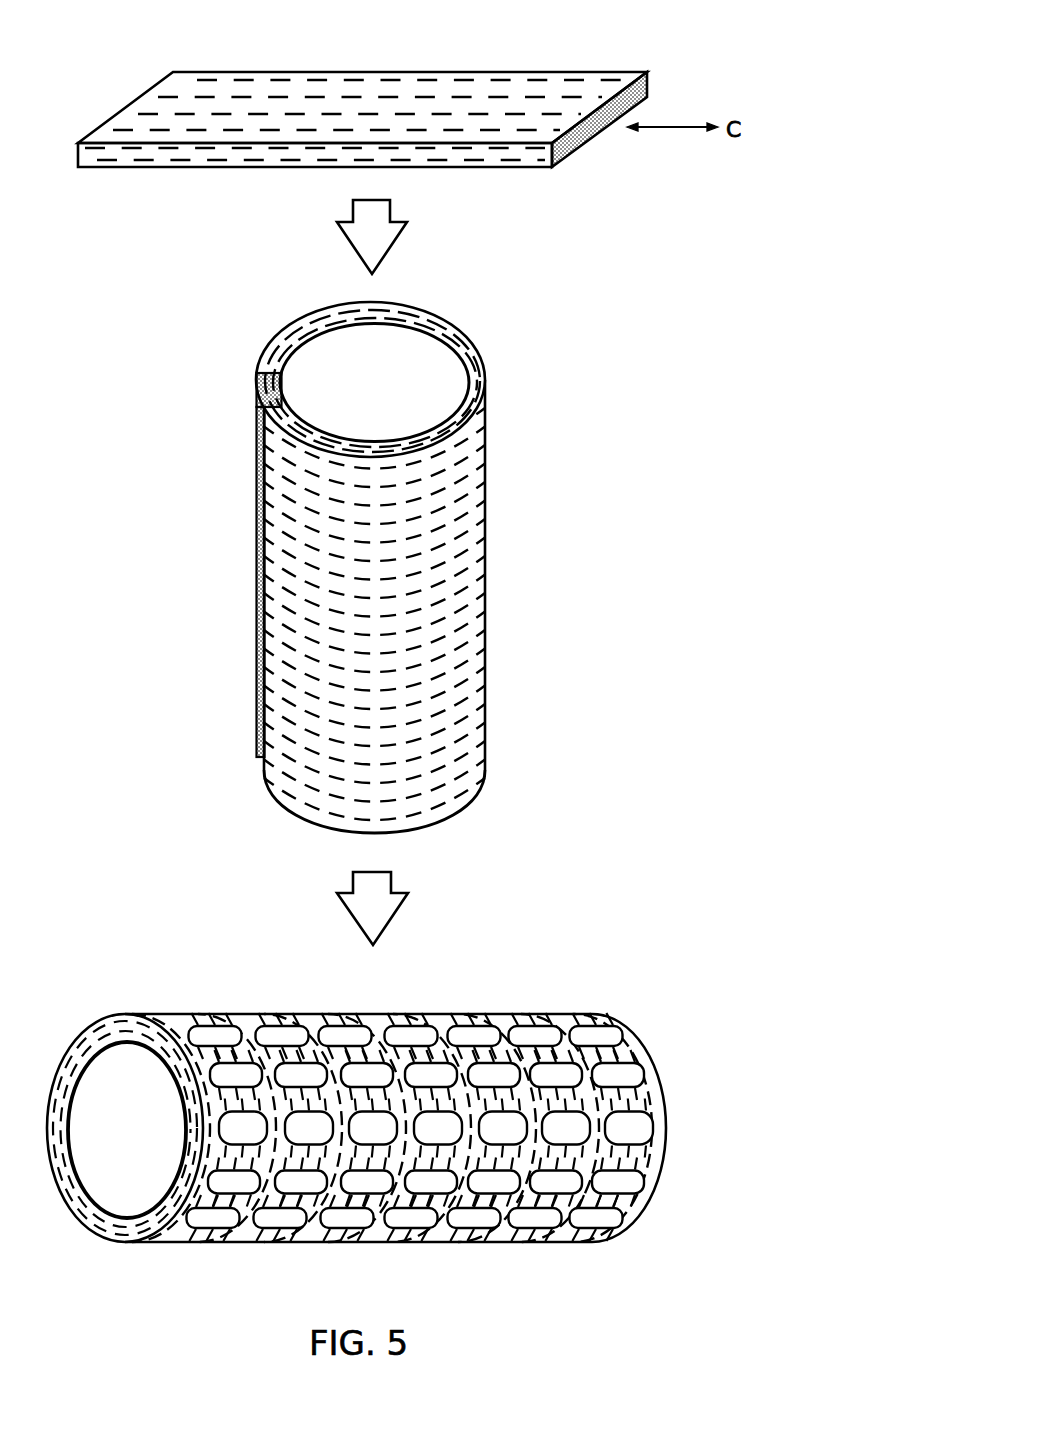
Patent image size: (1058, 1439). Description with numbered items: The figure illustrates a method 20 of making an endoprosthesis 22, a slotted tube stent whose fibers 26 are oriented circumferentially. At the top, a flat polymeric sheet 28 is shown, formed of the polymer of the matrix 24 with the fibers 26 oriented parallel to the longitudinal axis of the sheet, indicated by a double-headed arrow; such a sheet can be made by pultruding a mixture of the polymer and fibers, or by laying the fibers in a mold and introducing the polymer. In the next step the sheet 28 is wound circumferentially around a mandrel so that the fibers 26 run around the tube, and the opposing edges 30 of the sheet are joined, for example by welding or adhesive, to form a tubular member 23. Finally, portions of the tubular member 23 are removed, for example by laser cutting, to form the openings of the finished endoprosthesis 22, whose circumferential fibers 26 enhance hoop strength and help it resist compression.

The method 20 is at (696, 821).
The endoprosthesis 22 is at (402, 1156).
The tubular member 23 is at (128, 1244).
The matrix of polymer 24 is at (376, 661).
The fibers 26 is at (140, 164).
The polymeric sheet 28 is at (606, 160).
The opposing edges 30 is at (253, 387).